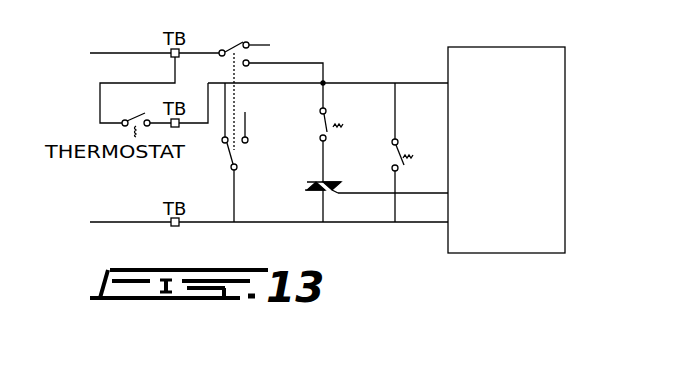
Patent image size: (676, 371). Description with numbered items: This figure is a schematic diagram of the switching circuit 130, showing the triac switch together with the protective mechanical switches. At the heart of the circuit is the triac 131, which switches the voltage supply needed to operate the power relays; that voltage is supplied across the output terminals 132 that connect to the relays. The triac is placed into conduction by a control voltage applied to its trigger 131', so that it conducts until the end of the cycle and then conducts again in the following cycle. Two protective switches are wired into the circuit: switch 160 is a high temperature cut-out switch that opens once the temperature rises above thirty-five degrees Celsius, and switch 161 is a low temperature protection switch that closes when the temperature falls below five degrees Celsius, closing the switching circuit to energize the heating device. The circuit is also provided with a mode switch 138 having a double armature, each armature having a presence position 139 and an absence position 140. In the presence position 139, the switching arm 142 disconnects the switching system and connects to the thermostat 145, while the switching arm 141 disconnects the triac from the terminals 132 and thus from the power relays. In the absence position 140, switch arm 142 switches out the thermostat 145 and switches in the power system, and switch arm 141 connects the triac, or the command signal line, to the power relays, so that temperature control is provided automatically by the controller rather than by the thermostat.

The switching circuit 130 is at (479, 32).
The triac 131 is at (359, 217).
The trigger 131' is at (349, 221).
The output terminals 132 is at (129, 52).
The mode switch 138 is at (259, 116).
The presence position 139 is at (270, 45).
The absence position 140 is at (248, 140).
The switching arm 141 is at (236, 41).
The switching arm 142 is at (238, 153).
The thermostat 145 is at (120, 134).
The high temperature cut-out switch 160 is at (328, 133).
The low temperature protection switch 161 is at (401, 147).